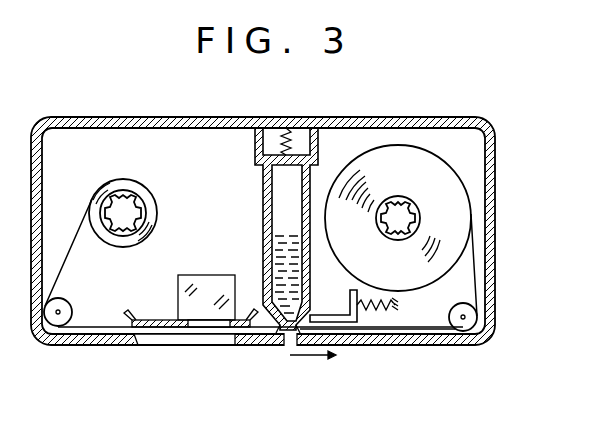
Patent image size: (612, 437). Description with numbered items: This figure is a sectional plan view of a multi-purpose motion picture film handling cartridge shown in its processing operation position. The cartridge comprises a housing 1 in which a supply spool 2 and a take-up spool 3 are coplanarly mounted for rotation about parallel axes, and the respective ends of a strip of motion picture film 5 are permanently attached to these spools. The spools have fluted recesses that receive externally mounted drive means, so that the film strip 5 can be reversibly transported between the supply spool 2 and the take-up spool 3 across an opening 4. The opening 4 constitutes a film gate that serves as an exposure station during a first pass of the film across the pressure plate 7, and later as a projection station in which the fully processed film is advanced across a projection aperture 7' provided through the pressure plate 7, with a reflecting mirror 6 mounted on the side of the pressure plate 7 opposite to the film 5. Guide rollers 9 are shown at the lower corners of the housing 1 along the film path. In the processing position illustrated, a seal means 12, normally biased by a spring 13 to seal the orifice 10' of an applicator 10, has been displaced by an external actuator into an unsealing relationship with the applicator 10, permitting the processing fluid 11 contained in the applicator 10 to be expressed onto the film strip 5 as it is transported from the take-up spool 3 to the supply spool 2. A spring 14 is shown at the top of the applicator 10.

The housing 1 is at (183, 117).
The supply spool 2 is at (405, 211).
The take-up spool 3 is at (131, 208).
The opening 4 is at (146, 340).
The film strip 5 is at (460, 205).
The reflecting mirror 6 is at (188, 284).
The pressure plate 7 is at (191, 306).
The projection aperture 7' is at (194, 356).
The guide rollers 9 is at (60, 323).
The applicator 10 is at (306, 237).
The orifice 10' is at (286, 364).
The processing fluid 11 is at (285, 232).
The seal means 12 is at (350, 334).
The spring 13 is at (352, 302).
The spring 14 is at (297, 134).